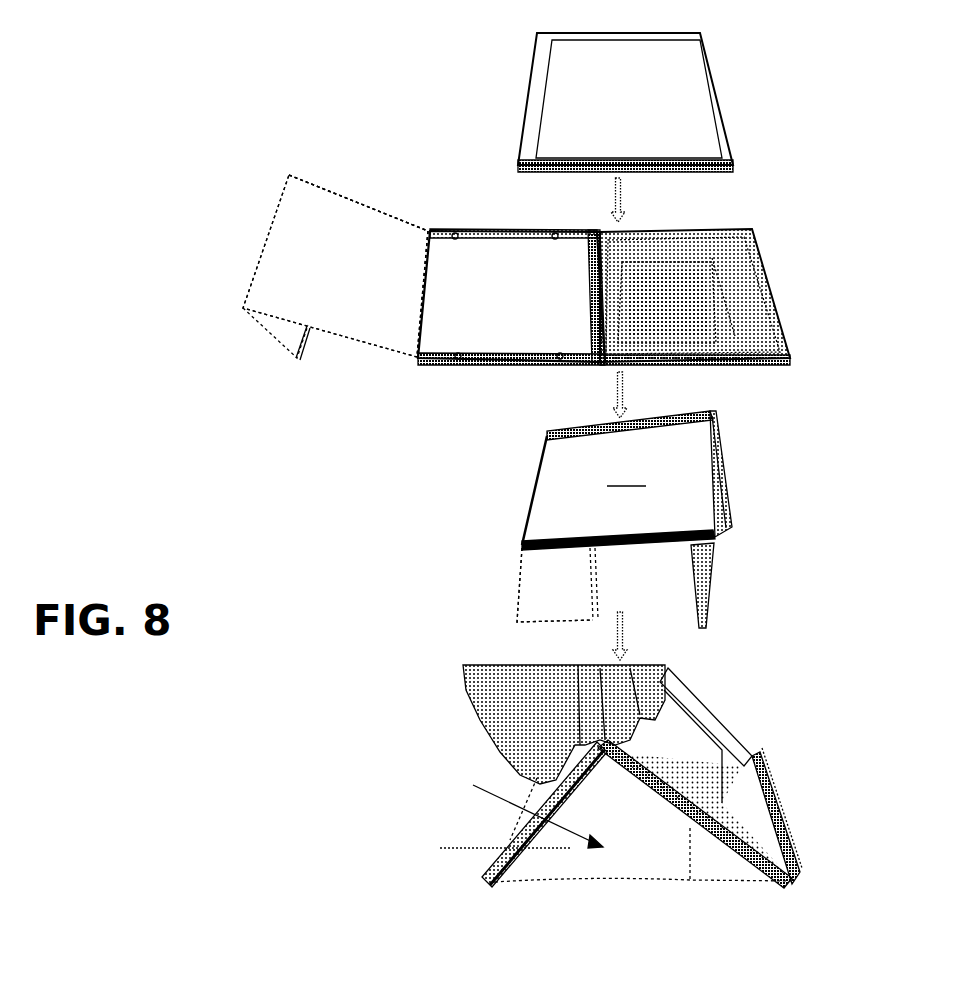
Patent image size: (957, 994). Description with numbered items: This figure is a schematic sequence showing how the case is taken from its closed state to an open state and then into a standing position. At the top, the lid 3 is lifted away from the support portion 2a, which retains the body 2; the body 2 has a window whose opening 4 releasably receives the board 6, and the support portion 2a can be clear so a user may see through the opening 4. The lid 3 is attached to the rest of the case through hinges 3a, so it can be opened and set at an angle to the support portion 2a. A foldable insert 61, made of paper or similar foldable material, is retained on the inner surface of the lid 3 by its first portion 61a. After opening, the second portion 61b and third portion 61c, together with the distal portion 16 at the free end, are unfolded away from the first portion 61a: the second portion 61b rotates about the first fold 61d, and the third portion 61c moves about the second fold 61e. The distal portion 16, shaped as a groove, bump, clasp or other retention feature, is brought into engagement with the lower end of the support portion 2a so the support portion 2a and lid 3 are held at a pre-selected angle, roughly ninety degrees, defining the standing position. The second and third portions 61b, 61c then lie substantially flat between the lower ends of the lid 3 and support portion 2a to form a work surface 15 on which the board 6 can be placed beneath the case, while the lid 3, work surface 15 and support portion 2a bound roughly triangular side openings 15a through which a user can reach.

The body 2 is at (765, 315).
The support portion 2a is at (733, 165).
The lid 3 is at (670, 88).
The hinges 3a is at (600, 365).
The opening 4 is at (678, 740).
The board 6 is at (705, 258).
The work surface 15 is at (509, 798).
The side openings 15a is at (480, 844).
The distal portion 16 is at (295, 352).
The foldable insert 61 is at (209, 232).
The first portion 61a is at (493, 283).
The second portion 61b is at (368, 249).
The third portion 61c is at (264, 330).
The first fold 61d is at (425, 218).
The second fold 61e is at (283, 204).